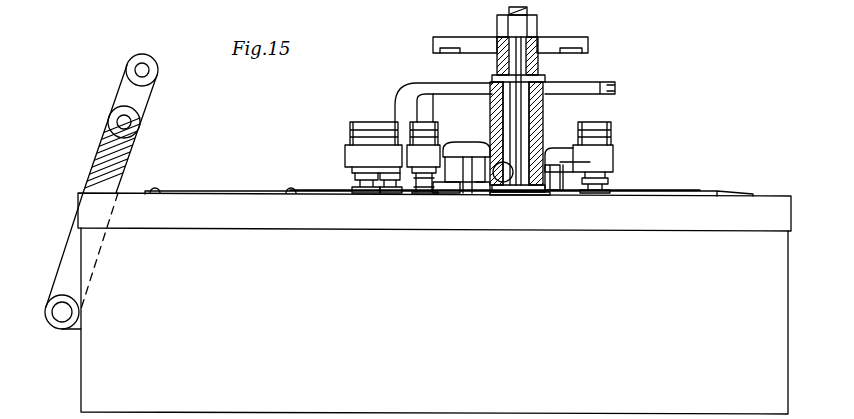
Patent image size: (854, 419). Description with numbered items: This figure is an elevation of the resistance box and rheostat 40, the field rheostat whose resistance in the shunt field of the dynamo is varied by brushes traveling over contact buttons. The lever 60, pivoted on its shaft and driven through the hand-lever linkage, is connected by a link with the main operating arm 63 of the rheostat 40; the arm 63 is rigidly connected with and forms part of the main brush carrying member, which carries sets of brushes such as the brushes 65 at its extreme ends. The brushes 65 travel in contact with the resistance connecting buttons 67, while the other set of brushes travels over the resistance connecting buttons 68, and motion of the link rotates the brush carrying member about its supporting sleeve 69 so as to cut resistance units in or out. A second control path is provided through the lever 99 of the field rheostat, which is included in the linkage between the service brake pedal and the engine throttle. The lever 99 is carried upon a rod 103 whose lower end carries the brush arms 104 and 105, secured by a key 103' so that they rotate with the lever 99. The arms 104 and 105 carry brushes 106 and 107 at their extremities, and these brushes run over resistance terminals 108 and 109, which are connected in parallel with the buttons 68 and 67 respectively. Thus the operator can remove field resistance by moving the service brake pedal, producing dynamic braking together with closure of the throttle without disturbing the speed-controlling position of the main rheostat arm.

The lever 60 is at (130, 142).
The rheostat 40 is at (303, 212).
The resistance connecting buttons 68 is at (660, 196).
The brushes 65 is at (366, 155).
The resistance connecting buttons 67 is at (330, 188).
The brush 107 is at (428, 193).
The resistance terminals 109 is at (422, 192).
The rod 103 is at (470, 99).
The supporting sleeve 69 is at (547, 78).
The lever 99 is at (462, 44).
The main operating arm 63 is at (618, 89).
The brush arm 105 is at (461, 146).
The brush 106 is at (598, 155).
The resistance terminals 108 is at (604, 188).
The brush arm 104 is at (562, 191).
The key 103' is at (519, 207).